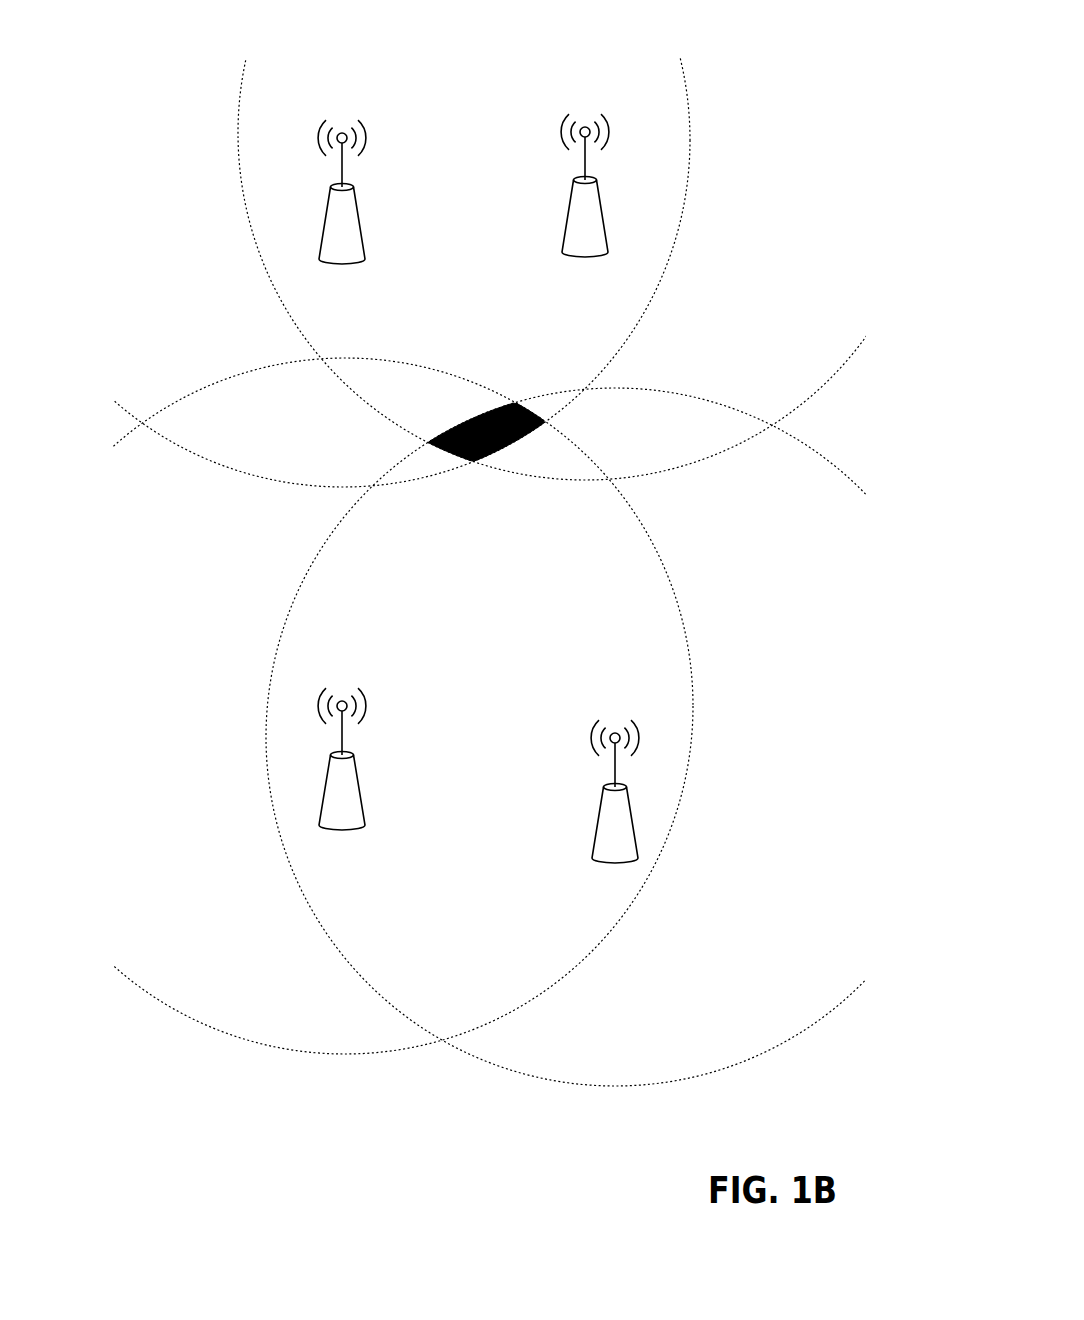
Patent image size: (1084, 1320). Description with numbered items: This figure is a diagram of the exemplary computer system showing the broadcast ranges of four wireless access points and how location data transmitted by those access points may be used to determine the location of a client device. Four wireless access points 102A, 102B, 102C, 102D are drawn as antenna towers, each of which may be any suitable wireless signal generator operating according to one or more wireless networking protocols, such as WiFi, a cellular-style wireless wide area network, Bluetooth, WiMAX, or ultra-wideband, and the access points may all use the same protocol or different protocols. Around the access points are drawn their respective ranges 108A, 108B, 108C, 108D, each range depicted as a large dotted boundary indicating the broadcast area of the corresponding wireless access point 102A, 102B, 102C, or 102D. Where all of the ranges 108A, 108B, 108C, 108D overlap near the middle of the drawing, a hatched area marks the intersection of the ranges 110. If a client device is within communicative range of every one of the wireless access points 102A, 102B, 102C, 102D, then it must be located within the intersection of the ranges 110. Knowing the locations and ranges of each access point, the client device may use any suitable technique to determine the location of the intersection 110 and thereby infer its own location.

The wireless access point 102A is at (363, 198).
The wireless access point 102B is at (603, 192).
The wireless access point 102C is at (373, 779).
The wireless access point 102D is at (593, 822).
The range 108A is at (197, 455).
The range 108B is at (812, 397).
The range 108C is at (150, 995).
The range 108D is at (502, 1068).
The intersection of the ranges 110 is at (472, 461).